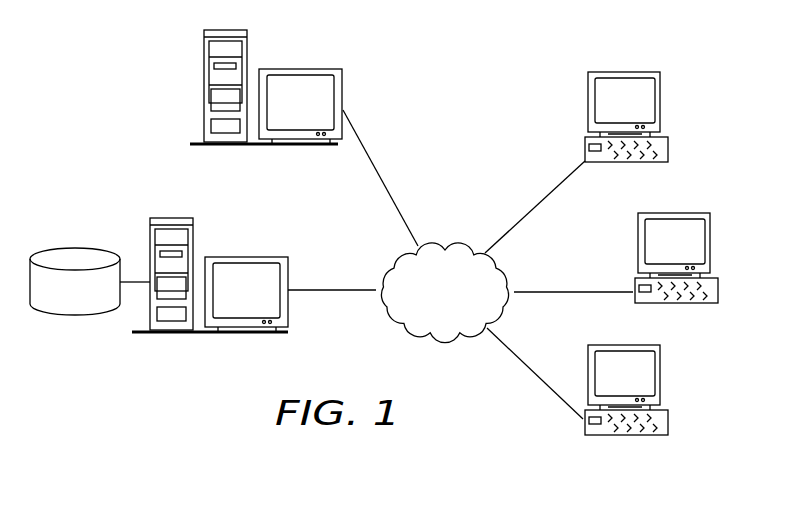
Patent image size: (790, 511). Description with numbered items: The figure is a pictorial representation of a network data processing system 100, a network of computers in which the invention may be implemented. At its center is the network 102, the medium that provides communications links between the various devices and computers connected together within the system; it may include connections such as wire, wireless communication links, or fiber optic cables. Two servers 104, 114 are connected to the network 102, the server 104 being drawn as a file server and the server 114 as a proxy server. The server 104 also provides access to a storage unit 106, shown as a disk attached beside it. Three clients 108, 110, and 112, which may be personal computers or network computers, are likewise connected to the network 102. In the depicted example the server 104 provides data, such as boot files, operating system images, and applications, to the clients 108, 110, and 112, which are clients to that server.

The network data processing system 100 is at (128, 151).
The network 102 is at (463, 319).
The server 104 is at (263, 300).
The storage unit 106 is at (75, 258).
The client 108 is at (660, 103).
The client 110 is at (684, 213).
The client 112 is at (660, 372).
The server 114 is at (317, 112).